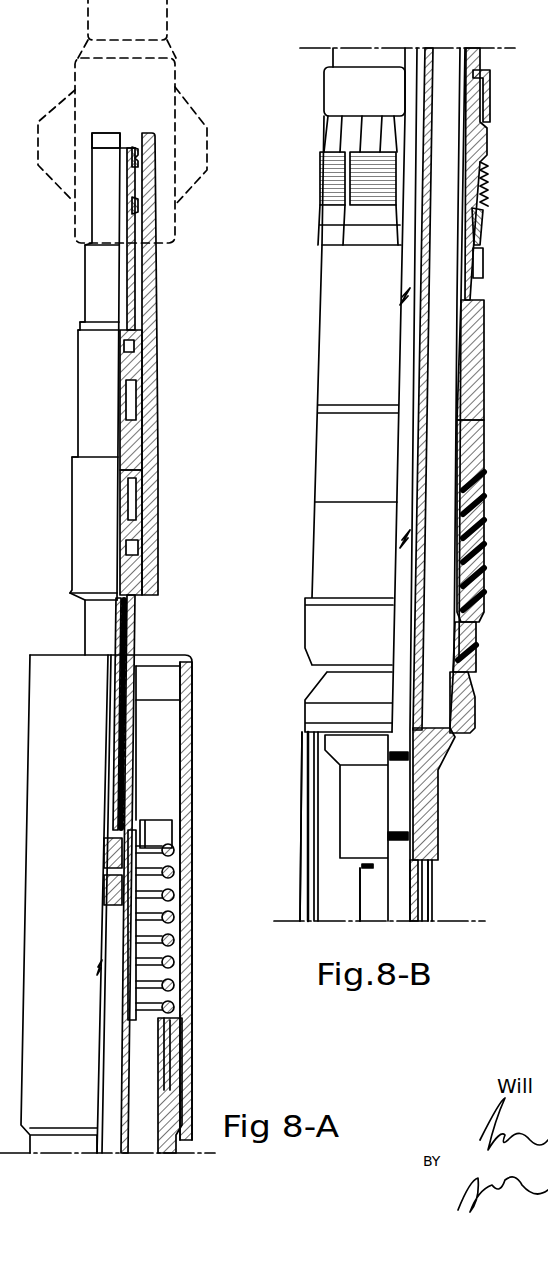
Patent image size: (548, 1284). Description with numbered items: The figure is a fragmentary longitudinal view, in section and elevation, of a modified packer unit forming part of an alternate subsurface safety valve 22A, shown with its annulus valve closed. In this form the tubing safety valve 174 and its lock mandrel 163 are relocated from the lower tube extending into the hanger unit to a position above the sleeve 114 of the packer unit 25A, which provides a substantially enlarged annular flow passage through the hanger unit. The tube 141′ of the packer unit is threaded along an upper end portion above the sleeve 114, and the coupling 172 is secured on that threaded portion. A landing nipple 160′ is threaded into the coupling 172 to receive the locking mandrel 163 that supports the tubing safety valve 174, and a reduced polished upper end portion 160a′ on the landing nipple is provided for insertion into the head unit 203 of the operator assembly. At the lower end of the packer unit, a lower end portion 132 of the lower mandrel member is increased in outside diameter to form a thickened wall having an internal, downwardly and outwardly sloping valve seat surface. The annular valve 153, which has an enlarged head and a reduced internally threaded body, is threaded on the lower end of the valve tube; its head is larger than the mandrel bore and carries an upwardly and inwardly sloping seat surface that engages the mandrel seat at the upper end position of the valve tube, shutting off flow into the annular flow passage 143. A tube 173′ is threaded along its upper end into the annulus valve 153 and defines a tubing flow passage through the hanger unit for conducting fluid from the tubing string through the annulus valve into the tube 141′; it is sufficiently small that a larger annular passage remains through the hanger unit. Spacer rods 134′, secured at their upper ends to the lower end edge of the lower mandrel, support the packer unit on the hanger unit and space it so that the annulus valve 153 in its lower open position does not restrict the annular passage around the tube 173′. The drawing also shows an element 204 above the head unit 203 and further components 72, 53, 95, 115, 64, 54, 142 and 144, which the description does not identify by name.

In FIG. 8-A, the tubing string section 204 is at (168, 27).
In FIG. 8-A, the head unit 203 is at (176, 74).
In FIG. 8-A, the lock mandrel 163 is at (131, 138).
In FIG. 8-A, the reduced polished upper end portion 160a′ is at (158, 170).
In FIG. 8-A, the landing nipple 160′ is at (160, 259).
In FIG. 8-A, the subsurface safety valve 22A is at (37, 378).
In FIG. 8-A, the coupling 172 is at (150, 560).
In FIG. 8-A, the tube 141′ is at (138, 634).
In FIG. 8-B, the tube 141′ is at (426, 356).
In FIG. 8-A, the sleeve 114 is at (192, 732).
In FIG. 8-A, the spring 144 is at (176, 873).
In FIG. 8-A, the tubing safety valve 174 is at (112, 950).
In FIG. 8-A, the packer unit 25A is at (192, 1036).
In FIG. 8-B, the slips 72 is at (327, 137).
In FIG. 8-B, the slip carrier 53 is at (494, 143).
In FIG. 8-B, the retainer 95 is at (483, 230).
In FIG. 8-B, the body section 115 is at (488, 375).
In FIG. 8-B, the packing element 64 is at (480, 437).
In FIG. 8-B, the packing rings 54 is at (482, 552).
In FIG. 8-B, the annular flow passage 143 is at (442, 612).
In FIG. 8-B, the central tube 142 is at (405, 630).
In FIG. 8-B, the lower end portion of the lower mandrel member 132 is at (476, 718).
In FIG. 8-B, the annular valve 153 is at (442, 780).
In FIG. 8-B, the spacer rods 134′ is at (298, 846).
In FIG. 8-B, the tube 173′ is at (408, 925).